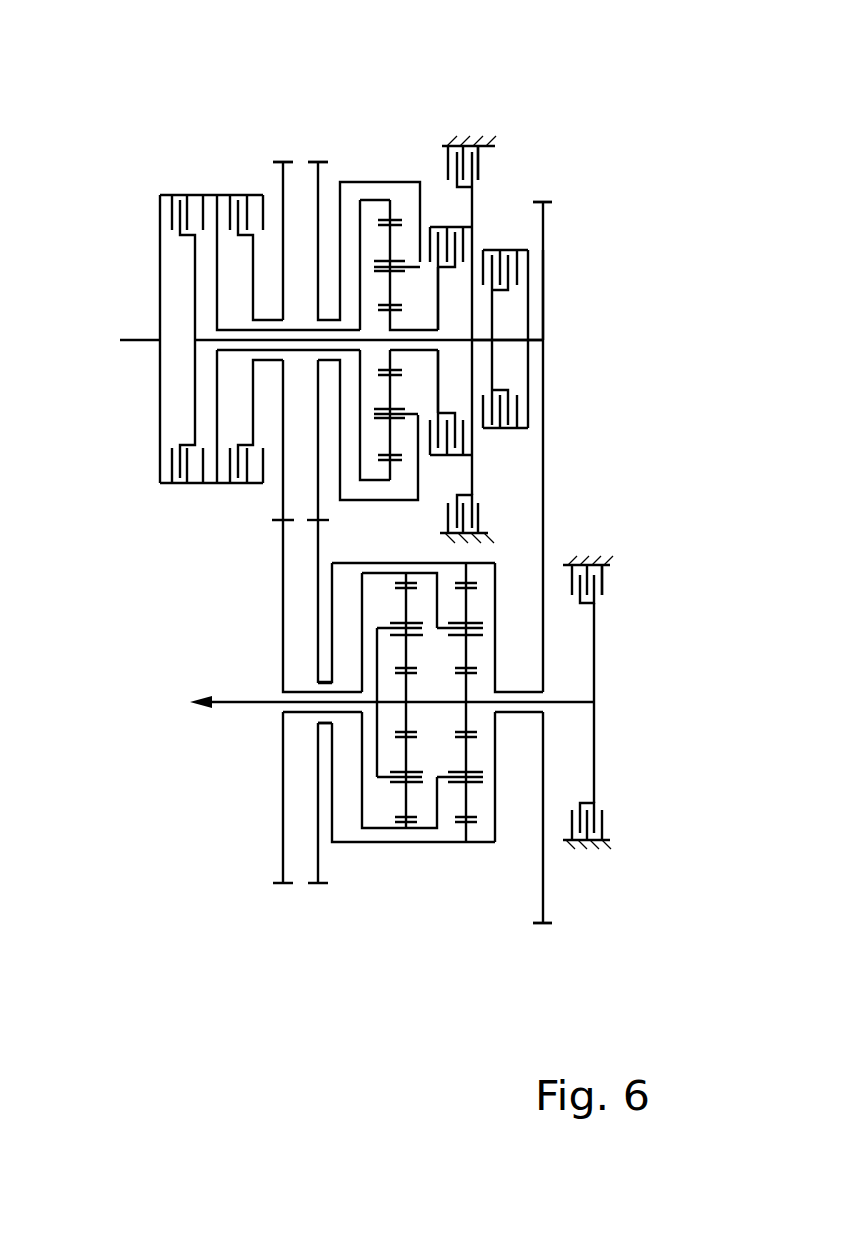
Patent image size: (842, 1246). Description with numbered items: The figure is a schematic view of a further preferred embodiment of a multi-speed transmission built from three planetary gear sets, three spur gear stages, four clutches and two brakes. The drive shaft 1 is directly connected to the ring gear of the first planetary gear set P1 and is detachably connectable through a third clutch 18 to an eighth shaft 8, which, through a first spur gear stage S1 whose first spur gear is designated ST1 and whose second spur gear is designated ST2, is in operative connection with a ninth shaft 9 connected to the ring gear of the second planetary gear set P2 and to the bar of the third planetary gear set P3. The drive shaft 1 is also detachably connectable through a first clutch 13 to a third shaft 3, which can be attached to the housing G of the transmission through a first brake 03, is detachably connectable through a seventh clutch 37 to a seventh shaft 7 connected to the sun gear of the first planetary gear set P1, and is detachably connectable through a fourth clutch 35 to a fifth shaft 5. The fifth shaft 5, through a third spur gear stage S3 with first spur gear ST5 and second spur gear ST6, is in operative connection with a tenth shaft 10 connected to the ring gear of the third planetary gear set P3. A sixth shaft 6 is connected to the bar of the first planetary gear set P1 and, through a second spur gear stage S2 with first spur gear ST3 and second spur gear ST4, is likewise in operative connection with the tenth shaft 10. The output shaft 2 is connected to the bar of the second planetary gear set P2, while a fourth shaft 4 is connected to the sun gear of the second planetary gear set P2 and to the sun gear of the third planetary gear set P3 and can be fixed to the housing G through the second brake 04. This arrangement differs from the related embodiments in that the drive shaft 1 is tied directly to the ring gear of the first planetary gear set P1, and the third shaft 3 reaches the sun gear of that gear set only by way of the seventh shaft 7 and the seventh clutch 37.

The drive shaft 1 is at (120, 340).
The output shaft 2 is at (237, 705).
The third shaft 3 is at (463, 345).
The fourth shaft 4 is at (593, 647).
The fifth shaft 5 is at (545, 288).
The sixth shaft 6 is at (317, 460).
The seventh shaft 7 is at (440, 283).
The eighth shaft 8 is at (283, 510).
The ninth shaft 9 is at (282, 650).
The tenth shaft 10 is at (347, 563).
The first clutch 13 is at (163, 214).
The third clutch 18 is at (237, 196).
The fourth clutch 35 is at (505, 268).
The seventh clutch 37 is at (468, 247).
The first brake 03 is at (480, 163).
The second brake 04 is at (603, 586).
The housing G is at (460, 144).
The first planetary gear set P1 is at (390, 155).
The second planetary gear set P2 is at (407, 886).
The third planetary gear set P3 is at (465, 886).
The first spur gear stage S1 is at (283, 132).
The second spur gear stage S2 is at (318, 132).
The third spur gear stage S3 is at (543, 165).
The first spur gear of the first spur gear stage ST1 is at (277, 160).
The second spur gear of the first spur gear stage ST2 is at (275, 887).
The first spur gear of the second spur gear stage ST3 is at (308, 160).
The second spur gear of the second spur gear stage ST4 is at (322, 888).
The first spur gear of the third spur gear stage ST5 is at (548, 198).
The second spur gear of the third spur gear stage ST6 is at (547, 927).